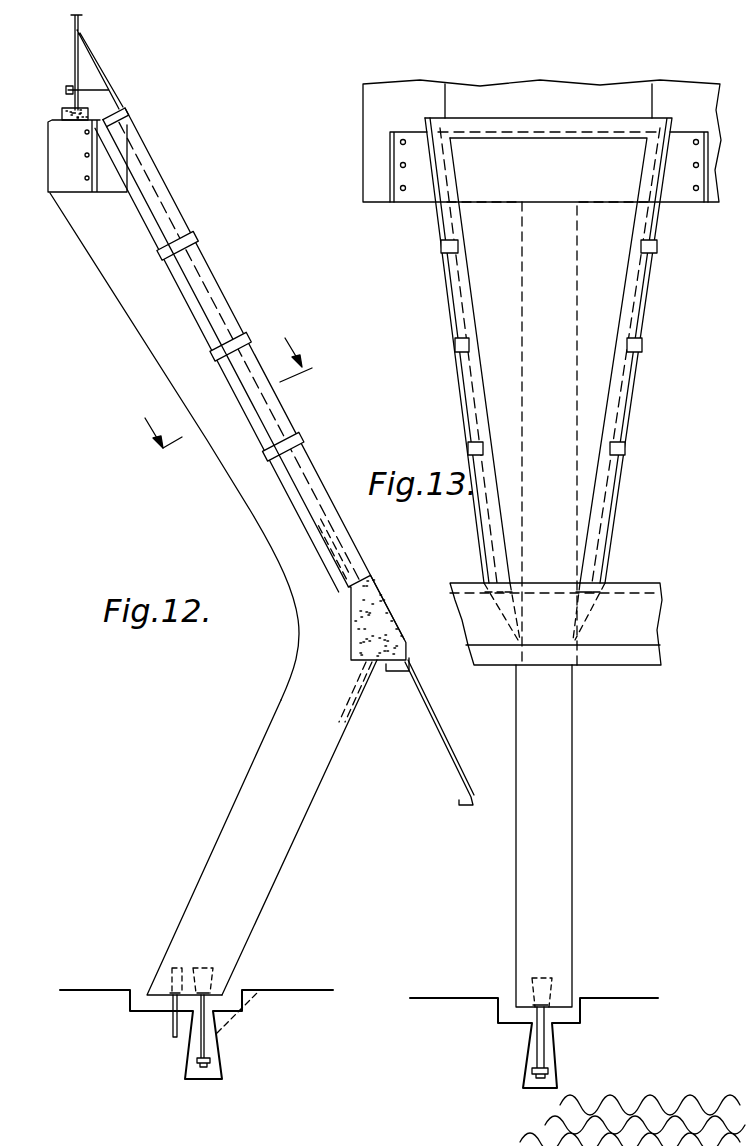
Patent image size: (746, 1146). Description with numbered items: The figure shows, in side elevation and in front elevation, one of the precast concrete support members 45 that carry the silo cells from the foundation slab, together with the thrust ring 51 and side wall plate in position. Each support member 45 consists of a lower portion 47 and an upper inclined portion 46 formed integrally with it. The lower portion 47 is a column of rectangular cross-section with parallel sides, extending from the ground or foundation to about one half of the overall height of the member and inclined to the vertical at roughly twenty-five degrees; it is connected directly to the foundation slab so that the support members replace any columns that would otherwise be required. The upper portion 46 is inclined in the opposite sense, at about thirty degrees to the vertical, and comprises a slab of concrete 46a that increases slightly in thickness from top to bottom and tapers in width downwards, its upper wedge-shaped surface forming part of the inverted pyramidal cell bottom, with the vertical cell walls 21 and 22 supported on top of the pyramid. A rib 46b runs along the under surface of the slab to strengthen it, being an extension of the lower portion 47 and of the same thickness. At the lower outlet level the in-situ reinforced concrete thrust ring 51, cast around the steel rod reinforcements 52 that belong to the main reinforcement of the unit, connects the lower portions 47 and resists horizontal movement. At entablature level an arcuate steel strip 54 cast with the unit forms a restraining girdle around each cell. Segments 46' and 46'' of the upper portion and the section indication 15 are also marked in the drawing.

In FIG. 13, the vertical cell wall 21 is at (552, 110).
In FIG. 12, the vertical cell wall 22 is at (80, 25).
In FIG. 13, the vertical cell wall 22 is at (713, 203).
In FIG. 12, the support member 45 is at (320, 787).
In FIG. 12, the upper inclined portion 46 is at (249, 373).
In FIG. 13, the upper inclined portion 46 is at (557, 350).
In FIG. 13, the slab of concrete 46a is at (613, 290).
In FIG. 13, the rib 46b is at (563, 402).
In FIG. 12, the tubular member segment 46' is at (332, 551).
In FIG. 12, the tubular member edge 46'' is at (174, 446).
In FIG. 12, the lower portion 47 is at (236, 832).
In FIG. 13, the lower portion 47 is at (532, 815).
In FIG. 12, the thrust ring 51 is at (368, 612).
In FIG. 13, the thrust ring 51 is at (627, 605).
In FIG. 12, the steel rod reinforcements 52 is at (396, 624).
In FIG. 12, the arcuate steel strip 54 is at (100, 153).
In FIG. 12, the section line 15 is at (224, 380).